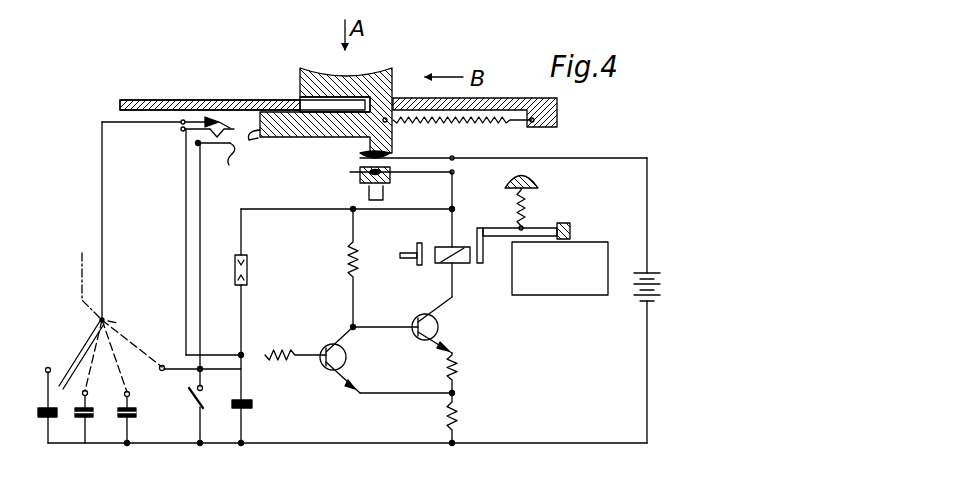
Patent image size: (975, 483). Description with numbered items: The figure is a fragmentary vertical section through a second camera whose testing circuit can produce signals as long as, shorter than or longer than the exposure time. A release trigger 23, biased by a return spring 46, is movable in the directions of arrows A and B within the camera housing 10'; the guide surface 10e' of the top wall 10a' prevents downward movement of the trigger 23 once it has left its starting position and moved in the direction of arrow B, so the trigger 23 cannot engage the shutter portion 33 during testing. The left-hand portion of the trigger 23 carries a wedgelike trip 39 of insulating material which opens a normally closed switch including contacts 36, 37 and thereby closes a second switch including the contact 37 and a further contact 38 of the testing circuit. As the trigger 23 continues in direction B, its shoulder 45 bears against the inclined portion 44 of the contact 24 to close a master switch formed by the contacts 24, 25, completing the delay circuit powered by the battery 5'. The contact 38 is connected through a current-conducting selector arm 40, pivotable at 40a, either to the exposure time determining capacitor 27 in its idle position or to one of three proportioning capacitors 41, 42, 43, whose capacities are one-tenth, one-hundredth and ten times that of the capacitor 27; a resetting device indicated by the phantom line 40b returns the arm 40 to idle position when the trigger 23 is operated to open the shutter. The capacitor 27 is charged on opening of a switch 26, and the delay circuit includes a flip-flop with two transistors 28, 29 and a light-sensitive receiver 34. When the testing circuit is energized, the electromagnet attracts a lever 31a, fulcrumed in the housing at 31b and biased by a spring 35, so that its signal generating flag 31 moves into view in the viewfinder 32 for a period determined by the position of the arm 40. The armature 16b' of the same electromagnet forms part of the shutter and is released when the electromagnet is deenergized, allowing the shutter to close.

The camera housing 10' is at (242, 81).
The top wall 10a' is at (475, 96).
The guide surface 10e' is at (316, 91).
The release trigger 23 is at (300, 70).
The contact 24 is at (445, 157).
The contact 25 is at (400, 174).
The switch 26 is at (190, 401).
The exposure time determining capacitor 27 is at (250, 407).
The transistor 28 is at (346, 360).
The transistor 29 is at (440, 325).
The signal generating flag 31 is at (568, 230).
The lever 31a is at (560, 228).
The fulcrum 31b is at (480, 230).
The viewfinder 32 is at (560, 296).
The shutter portion 33 is at (369, 192).
The light-sensitive receiver 34 is at (248, 270).
The spring 35 is at (526, 204).
The contact 36 is at (218, 165).
The contact 37 is at (234, 130).
The contact 38 is at (210, 118).
The wedgelike trip 39 is at (252, 139).
The selector arm 40 is at (68, 358).
The pivot 40a is at (129, 312).
The resetting device 40b is at (80, 272).
The proportioning capacitor 41 is at (113, 422).
The proportioning capacitor 42 is at (73, 422).
The proportioning capacitor 43 is at (44, 410).
The inclined portion 44 is at (366, 157).
The shoulder 45 is at (366, 151).
The return spring 46 is at (490, 123).
The battery 5' is at (640, 305).
The armature 16b' is at (430, 275).